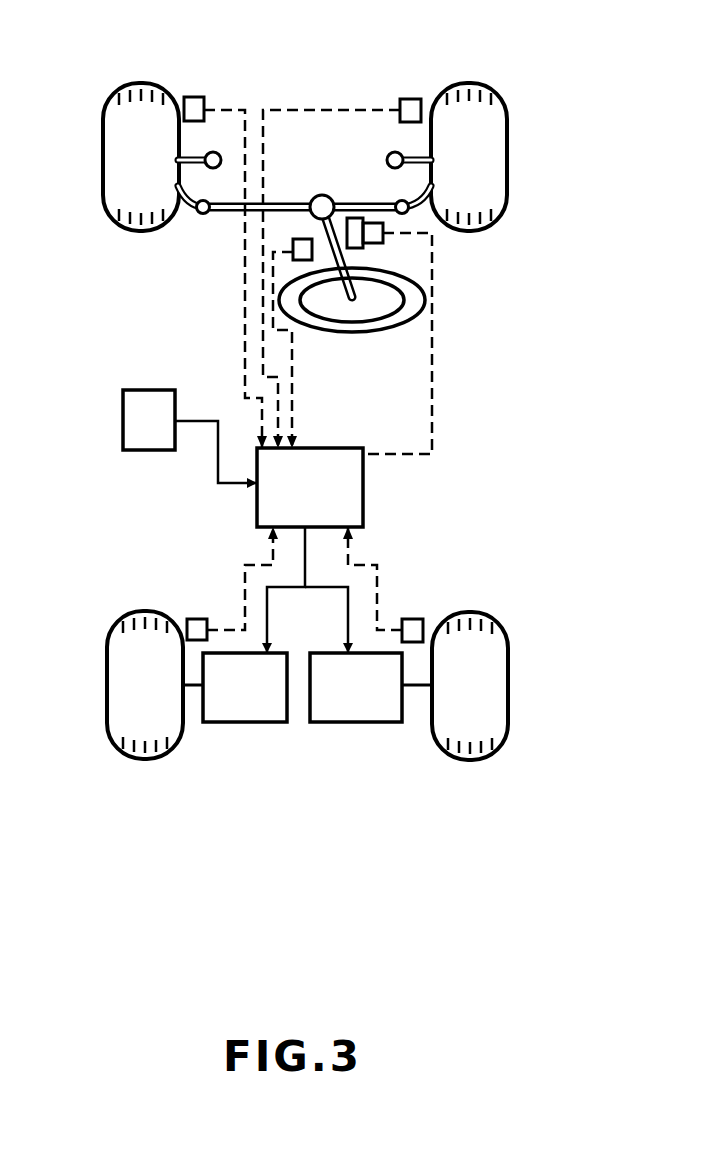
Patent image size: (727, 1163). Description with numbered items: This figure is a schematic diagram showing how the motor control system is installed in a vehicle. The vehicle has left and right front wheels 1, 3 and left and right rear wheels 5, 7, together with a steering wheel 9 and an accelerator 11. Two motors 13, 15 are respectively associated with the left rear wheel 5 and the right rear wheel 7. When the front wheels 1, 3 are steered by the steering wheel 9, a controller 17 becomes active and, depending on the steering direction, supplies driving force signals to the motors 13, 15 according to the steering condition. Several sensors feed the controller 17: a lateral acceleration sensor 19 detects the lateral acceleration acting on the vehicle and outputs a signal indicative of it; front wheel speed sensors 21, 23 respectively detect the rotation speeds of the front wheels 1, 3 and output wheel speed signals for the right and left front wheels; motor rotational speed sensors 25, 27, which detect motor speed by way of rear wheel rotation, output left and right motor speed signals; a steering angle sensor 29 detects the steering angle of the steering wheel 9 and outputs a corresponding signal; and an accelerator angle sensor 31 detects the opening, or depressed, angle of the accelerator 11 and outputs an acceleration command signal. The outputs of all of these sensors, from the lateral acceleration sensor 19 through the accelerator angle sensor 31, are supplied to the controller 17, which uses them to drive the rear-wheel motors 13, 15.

The left front wheel 1 is at (103, 186).
The right front wheel 3 is at (507, 155).
The left rear wheel 5 is at (107, 645).
The right rear wheel 7 is at (508, 638).
The steering wheel 9 is at (347, 333).
The accelerator 11 is at (352, 209).
The motor 13 is at (240, 722).
The motor 15 is at (364, 722).
The controller 17 is at (363, 502).
The lateral acceleration sensor 19 is at (123, 428).
The front wheel speed sensor 21 is at (193, 95).
The front wheel speed sensor 23 is at (414, 97).
The motor rotational speed sensor 25 is at (194, 618).
The motor rotational speed sensor 27 is at (415, 618).
The steering angle sensor 29 is at (290, 243).
The accelerator angle sensor 31 is at (383, 237).